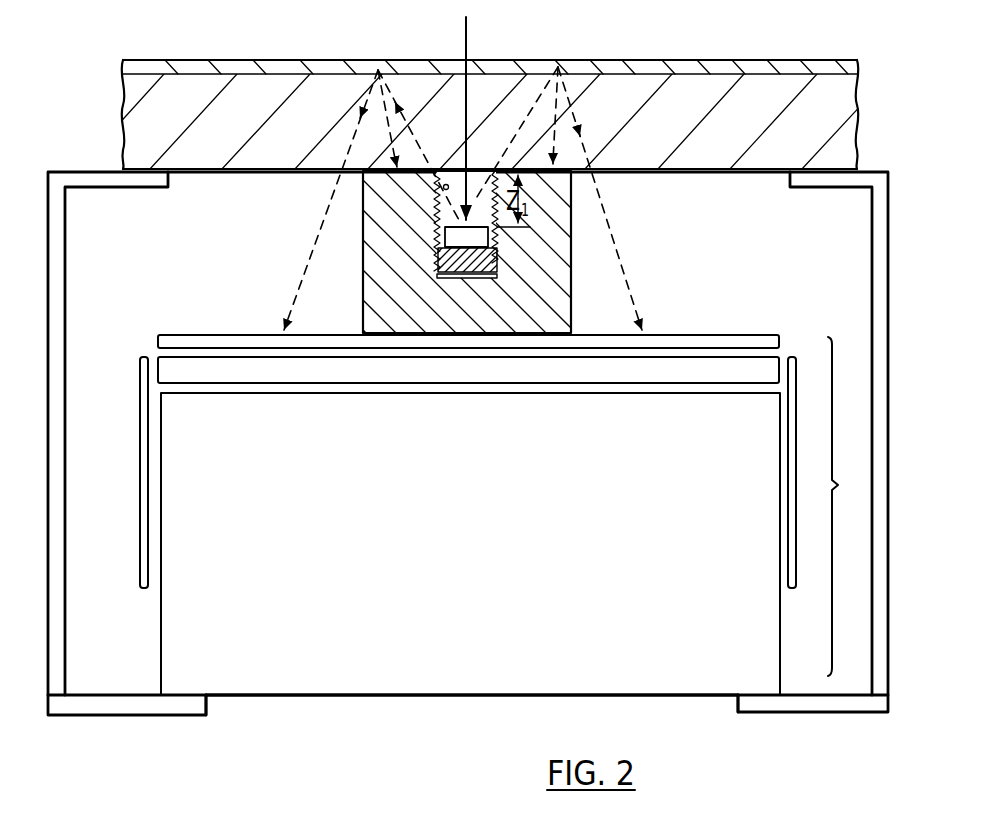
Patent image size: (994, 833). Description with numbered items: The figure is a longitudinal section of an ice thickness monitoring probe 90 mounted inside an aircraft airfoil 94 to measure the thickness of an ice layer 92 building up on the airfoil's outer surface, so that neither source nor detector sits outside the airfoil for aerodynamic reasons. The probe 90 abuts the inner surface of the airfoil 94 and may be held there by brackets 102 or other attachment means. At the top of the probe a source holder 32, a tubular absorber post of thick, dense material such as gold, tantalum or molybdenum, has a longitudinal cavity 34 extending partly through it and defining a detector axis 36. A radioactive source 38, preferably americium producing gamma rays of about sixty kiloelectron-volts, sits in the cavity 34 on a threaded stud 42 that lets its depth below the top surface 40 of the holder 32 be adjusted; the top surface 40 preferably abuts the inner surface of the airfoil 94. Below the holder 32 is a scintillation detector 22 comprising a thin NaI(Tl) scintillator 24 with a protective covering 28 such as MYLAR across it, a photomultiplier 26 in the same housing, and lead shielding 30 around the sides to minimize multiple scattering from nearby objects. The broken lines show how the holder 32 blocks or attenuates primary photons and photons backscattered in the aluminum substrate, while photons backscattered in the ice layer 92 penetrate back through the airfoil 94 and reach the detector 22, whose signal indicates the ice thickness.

The scintillation detector 22 is at (481, 483).
The NaI(Tl) scintillator 24 is at (718, 365).
The photomultiplier 26 is at (459, 634).
The protective covering 28 is at (232, 335).
The lead shielding 30 is at (140, 379).
The source holder 32 is at (572, 291).
The longitudinal cavity 34 is at (442, 188).
The detector axis 36 is at (468, 142).
The radioactive source 38 is at (462, 237).
The top surface 40 is at (566, 200).
The threaded stud 42 is at (472, 261).
The ice thickness monitoring probe 90 is at (800, 307).
The ice layer 92 is at (604, 63).
The airfoil 94 is at (747, 140).
The brackets 102 is at (98, 176).